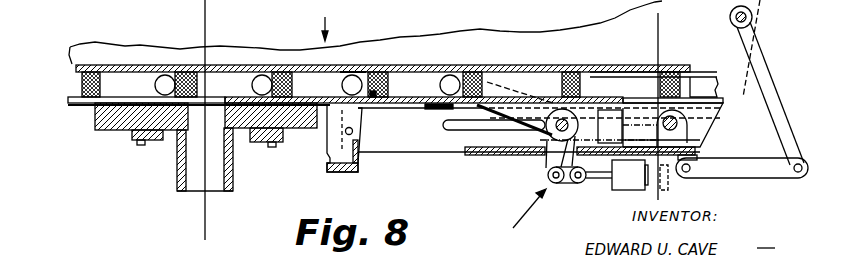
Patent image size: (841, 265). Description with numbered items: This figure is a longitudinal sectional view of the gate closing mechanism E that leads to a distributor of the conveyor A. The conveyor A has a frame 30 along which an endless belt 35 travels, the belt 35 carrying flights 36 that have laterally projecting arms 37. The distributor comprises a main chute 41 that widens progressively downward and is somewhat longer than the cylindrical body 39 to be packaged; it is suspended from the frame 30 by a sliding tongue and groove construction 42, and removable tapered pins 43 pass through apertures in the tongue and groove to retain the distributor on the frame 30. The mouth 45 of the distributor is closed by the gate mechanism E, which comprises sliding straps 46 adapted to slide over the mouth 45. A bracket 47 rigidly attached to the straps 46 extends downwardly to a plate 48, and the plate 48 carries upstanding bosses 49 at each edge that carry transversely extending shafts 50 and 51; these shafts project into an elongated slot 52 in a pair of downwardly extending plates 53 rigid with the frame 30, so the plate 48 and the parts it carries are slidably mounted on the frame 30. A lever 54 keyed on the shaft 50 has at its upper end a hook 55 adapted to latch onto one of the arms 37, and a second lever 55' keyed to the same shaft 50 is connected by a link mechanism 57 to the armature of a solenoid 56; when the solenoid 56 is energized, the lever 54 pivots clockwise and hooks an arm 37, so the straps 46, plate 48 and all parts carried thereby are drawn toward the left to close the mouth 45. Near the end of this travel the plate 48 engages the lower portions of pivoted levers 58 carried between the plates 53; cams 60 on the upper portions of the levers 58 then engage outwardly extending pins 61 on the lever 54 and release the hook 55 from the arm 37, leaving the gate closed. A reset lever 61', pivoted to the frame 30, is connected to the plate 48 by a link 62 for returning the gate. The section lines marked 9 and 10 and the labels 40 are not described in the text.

The frame 30 is at (567, 40).
The endless belt 35 is at (616, 67).
The flights 36 is at (578, 88).
The laterally projecting arms 37 is at (477, 88).
The cylindrical body 39 is at (353, 66).
The plate edge 40 is at (71, 105).
The main chute 41 is at (178, 187).
The sliding tongue and groove construction 42 is at (153, 137).
The removable tapered pins 43 is at (140, 146).
The mouth 45 is at (233, 147).
The sliding straps 46 is at (218, 100).
The bracket 47 is at (625, 112).
The plate 48 is at (477, 157).
The upstanding bosses 49 is at (698, 129).
The shaft 50 is at (560, 118).
The shaft 51 is at (688, 134).
The elongated slot 52 is at (455, 128).
The downwardly extending plates 53 is at (381, 143).
The lever 54 is at (522, 123).
The hook 55 is at (308, 64).
The lever 55' is at (536, 173).
The solenoid 56 is at (640, 175).
The link mechanism 57 is at (573, 178).
The pivoted levers 58 is at (338, 172).
The cams 60 is at (393, 100).
The outwardly extending pins 61 is at (520, 74).
The reset lever 61' is at (767, 82).
The link 62 is at (756, 158).
The section line 9 is at (210, 10).
The section line 10 is at (662, 15).
The conveyor A is at (324, 20).
The gate closing mechanism E is at (521, 213).